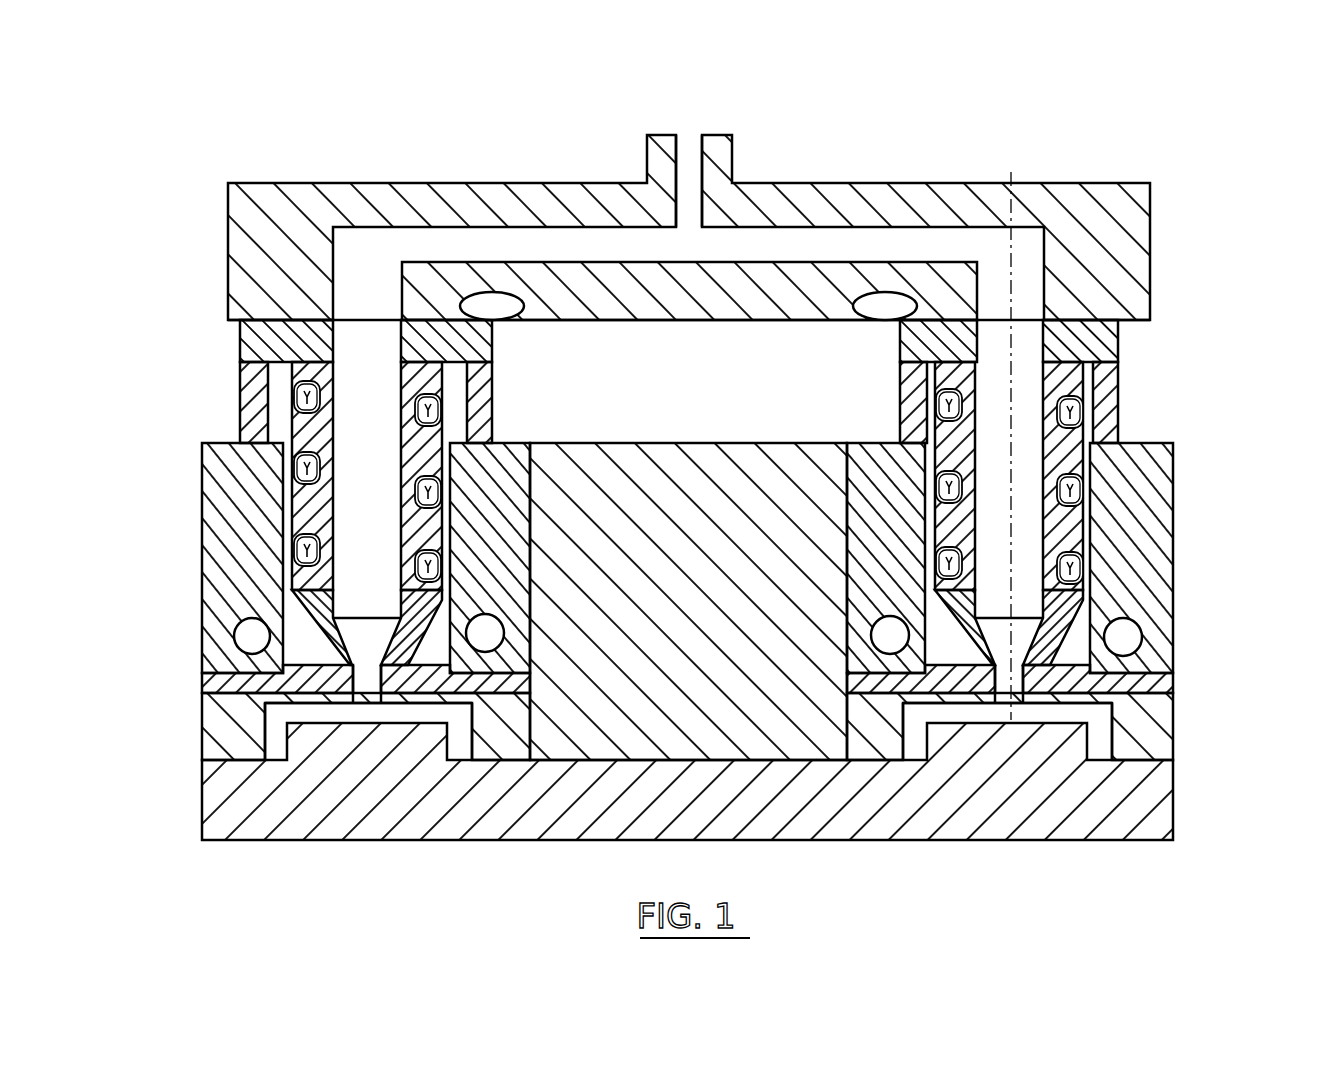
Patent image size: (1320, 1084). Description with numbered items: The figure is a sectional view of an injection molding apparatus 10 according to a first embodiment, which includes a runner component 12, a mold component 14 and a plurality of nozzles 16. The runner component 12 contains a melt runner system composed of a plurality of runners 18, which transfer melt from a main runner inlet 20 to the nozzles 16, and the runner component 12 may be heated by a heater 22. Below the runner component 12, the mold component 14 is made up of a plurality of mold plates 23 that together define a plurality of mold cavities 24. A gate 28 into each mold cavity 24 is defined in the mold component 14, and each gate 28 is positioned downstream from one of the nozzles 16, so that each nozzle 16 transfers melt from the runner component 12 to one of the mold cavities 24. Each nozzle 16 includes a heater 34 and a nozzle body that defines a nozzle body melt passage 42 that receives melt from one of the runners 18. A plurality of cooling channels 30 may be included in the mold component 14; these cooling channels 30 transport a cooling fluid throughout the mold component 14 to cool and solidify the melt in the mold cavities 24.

The injection molding apparatus 10 is at (968, 120).
The runner component 12 is at (1110, 183).
The mold component 14 is at (660, 444).
The nozzle 16 is at (438, 430).
The runner 18 is at (568, 245).
The main runner inlet 20 is at (700, 130).
The heater 22 is at (510, 303).
The mold plate 23 is at (1174, 730).
The mold cavity 24 is at (463, 743).
The gate 28 is at (370, 695).
The cooling channel 30 is at (250, 637).
The heater 34 is at (425, 400).
The nozzle body melt passage 42 is at (362, 525).